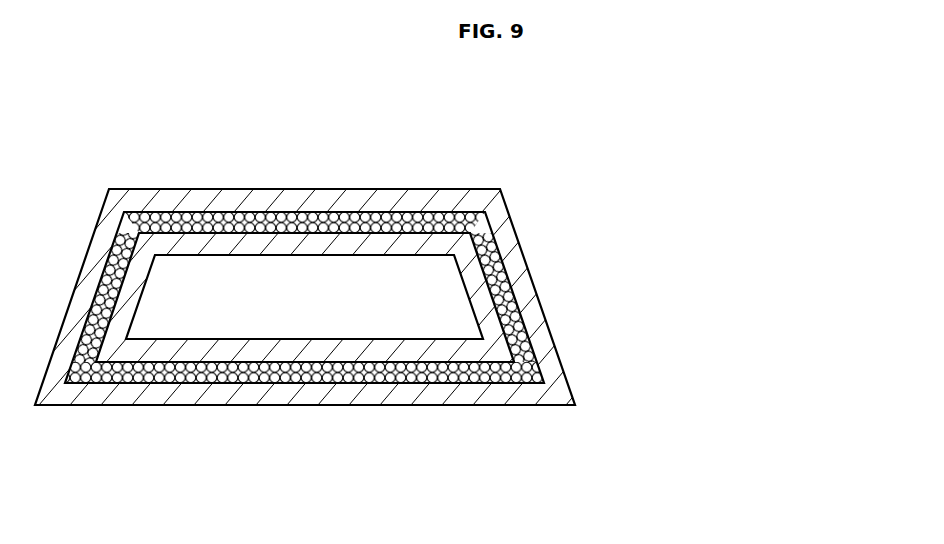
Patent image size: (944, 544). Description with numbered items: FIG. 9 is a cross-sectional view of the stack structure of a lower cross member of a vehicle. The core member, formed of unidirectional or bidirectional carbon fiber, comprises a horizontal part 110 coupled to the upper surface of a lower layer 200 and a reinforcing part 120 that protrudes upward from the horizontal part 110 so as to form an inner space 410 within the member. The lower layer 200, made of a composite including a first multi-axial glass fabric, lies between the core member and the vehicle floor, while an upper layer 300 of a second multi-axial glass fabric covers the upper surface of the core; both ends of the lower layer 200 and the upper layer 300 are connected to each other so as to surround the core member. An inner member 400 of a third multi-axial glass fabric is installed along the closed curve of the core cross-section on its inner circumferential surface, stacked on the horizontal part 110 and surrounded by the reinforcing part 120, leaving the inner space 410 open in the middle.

The horizontal part 110 is at (330, 373).
The reinforcing part 120 is at (525, 325).
The lower layer 200 is at (183, 397).
The upper layer 300 is at (512, 248).
The inner member 400 is at (256, 248).
The inner space 410 is at (343, 291).